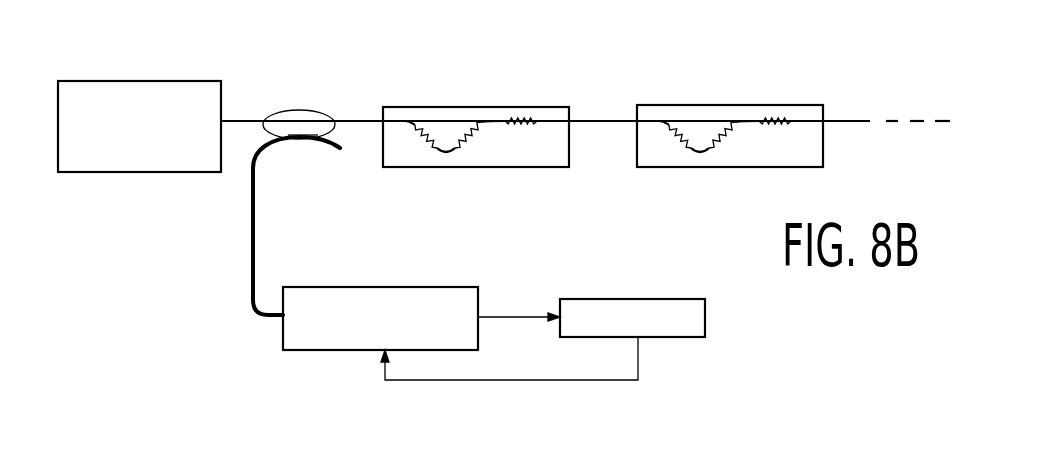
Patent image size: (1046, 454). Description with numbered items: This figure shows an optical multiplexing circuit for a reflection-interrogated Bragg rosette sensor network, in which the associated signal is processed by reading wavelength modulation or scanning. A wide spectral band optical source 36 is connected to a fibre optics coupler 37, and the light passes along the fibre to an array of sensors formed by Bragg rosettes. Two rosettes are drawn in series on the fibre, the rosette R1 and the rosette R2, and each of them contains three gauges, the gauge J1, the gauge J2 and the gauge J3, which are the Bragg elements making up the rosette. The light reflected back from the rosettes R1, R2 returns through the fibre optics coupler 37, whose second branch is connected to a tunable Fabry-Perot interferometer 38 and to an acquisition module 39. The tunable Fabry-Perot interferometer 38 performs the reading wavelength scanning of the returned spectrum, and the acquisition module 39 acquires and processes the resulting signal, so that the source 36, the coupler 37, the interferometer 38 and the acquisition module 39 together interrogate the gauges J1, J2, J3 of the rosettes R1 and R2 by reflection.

The wide spectral band optical source 36 is at (160, 48).
The fibre optics coupler 37 is at (317, 74).
The tunable Fabry-Perot interferometer 38 is at (317, 345).
The acquisition module 39 is at (680, 333).
The rosette R1 is at (476, 116).
The rosette R2 is at (730, 117).
The gauge J1 is at (523, 143).
The gauge J2 is at (602, 144).
The gauge J3 is at (656, 136).